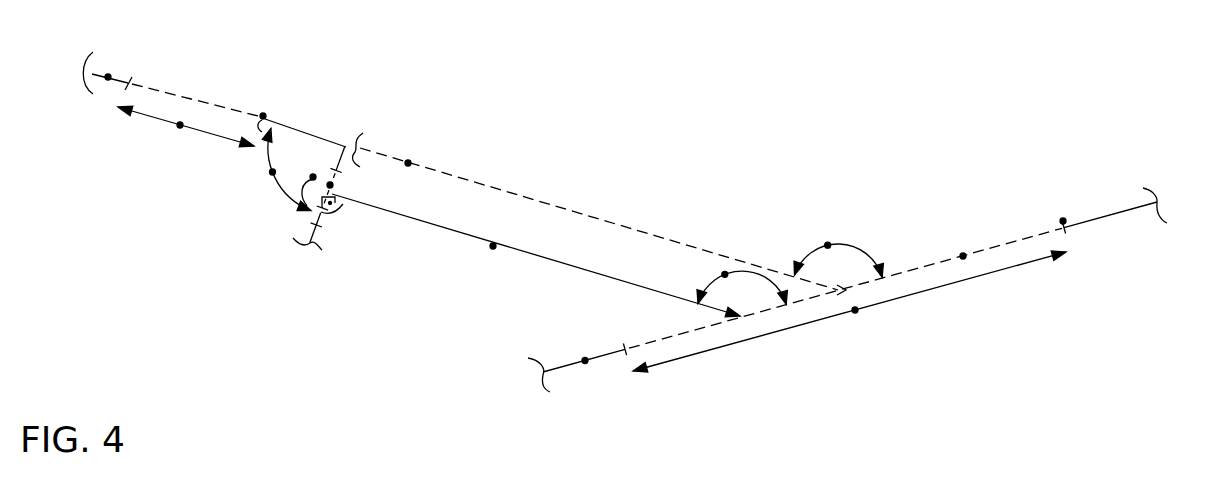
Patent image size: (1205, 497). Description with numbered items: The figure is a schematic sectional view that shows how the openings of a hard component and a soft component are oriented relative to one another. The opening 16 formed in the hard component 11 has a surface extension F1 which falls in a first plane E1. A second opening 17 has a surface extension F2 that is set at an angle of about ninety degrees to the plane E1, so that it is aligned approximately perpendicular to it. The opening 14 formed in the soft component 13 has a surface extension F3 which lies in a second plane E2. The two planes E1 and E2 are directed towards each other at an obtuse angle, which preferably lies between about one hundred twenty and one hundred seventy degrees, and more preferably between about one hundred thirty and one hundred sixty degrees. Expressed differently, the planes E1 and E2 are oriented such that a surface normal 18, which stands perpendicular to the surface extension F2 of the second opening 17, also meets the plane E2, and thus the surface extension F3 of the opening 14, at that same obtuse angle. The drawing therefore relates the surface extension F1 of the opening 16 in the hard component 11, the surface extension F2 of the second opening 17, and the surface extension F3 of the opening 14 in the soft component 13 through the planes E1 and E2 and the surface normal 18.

The hard component 11 is at (108, 75).
The soft component 13 is at (584, 358).
The opening 14 is at (1062, 218).
The opening 16 is at (262, 114).
The second opening 17 is at (333, 186).
The surface normal 18 is at (492, 248).
The surface extension F1 is at (179, 127).
The surface extension F2 is at (312, 175).
The surface extension F3 is at (856, 313).
The first plane E1 is at (409, 161).
The plane E2 is at (962, 253).